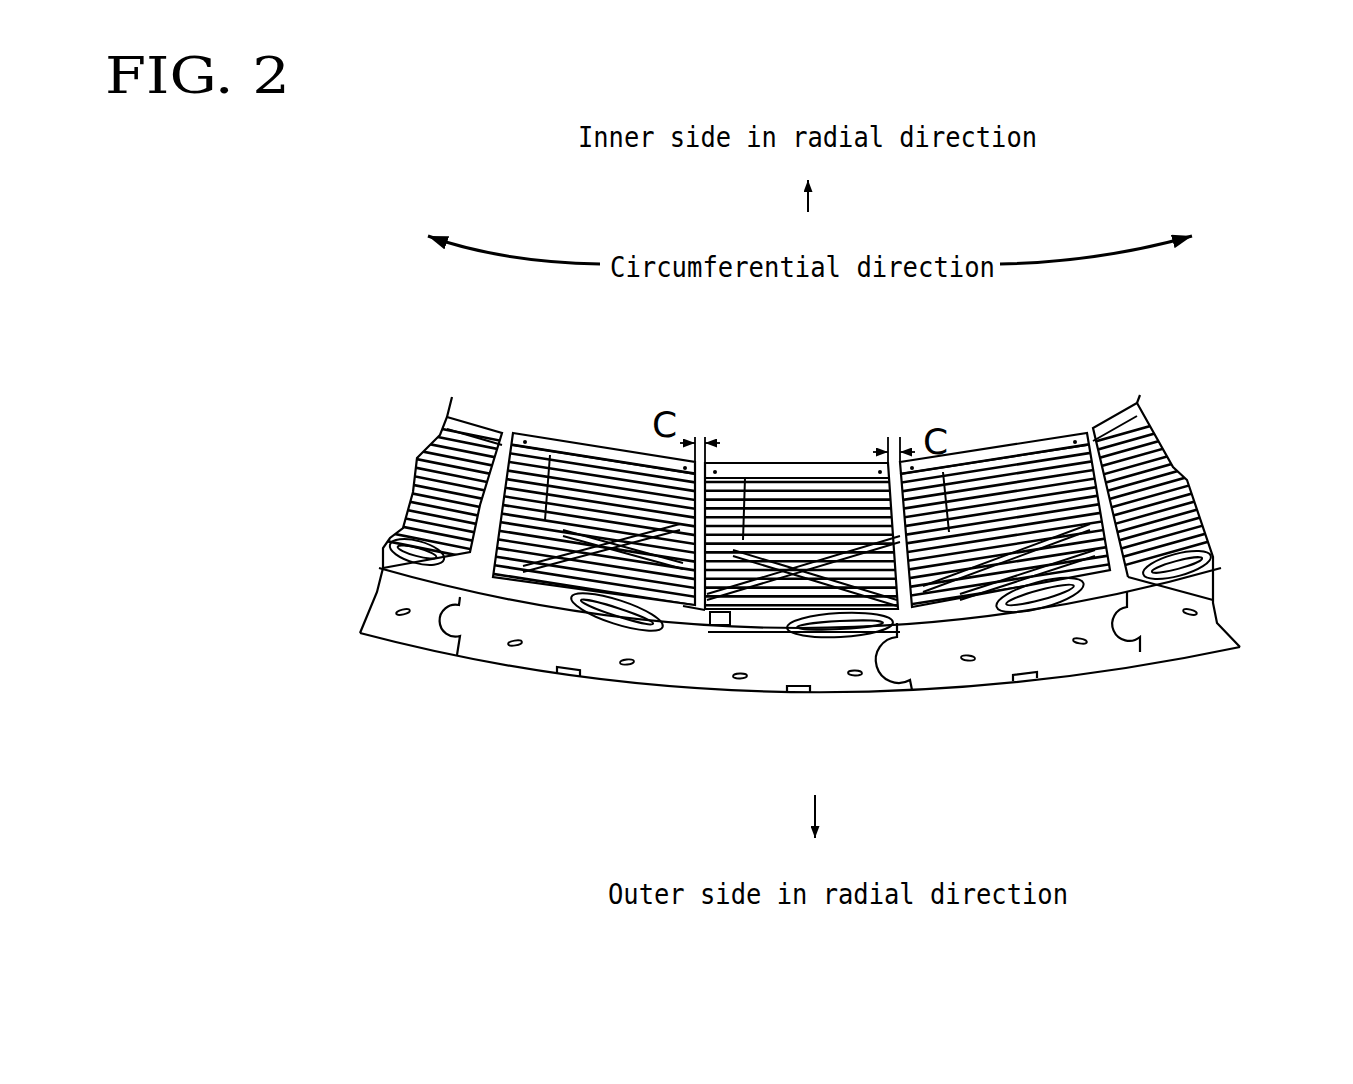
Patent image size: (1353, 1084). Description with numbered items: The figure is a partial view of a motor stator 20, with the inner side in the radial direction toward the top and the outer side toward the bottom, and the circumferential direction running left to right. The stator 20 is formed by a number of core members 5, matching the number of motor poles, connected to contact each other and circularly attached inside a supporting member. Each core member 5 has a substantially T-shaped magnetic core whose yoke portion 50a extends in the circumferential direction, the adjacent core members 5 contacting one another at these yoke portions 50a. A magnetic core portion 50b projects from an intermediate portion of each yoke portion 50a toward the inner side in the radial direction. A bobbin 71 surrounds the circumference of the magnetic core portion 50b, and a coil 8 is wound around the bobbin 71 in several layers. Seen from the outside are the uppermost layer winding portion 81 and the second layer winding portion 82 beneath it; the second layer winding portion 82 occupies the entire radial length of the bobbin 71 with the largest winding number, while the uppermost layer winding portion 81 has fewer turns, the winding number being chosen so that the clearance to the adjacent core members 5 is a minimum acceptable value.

The core member 5 is at (784, 605).
The coil 8 is at (822, 505).
The stator 20 is at (598, 753).
The yoke portion 50a is at (825, 677).
The magnetic core portion 50b is at (691, 618).
The bobbin 71 is at (848, 470).
The uppermost layer winding portion 81 is at (723, 548).
The second layer winding portion 82 is at (762, 490).